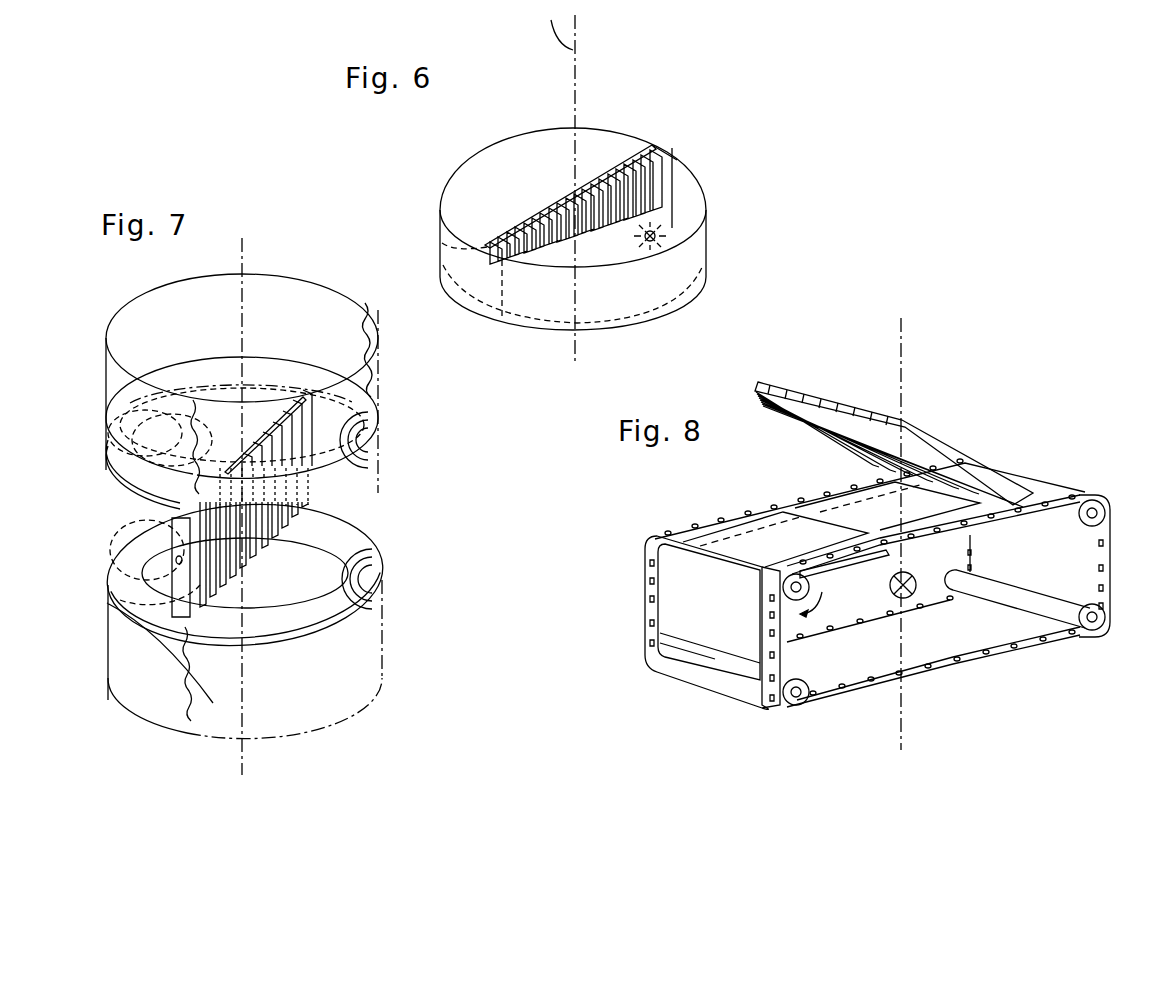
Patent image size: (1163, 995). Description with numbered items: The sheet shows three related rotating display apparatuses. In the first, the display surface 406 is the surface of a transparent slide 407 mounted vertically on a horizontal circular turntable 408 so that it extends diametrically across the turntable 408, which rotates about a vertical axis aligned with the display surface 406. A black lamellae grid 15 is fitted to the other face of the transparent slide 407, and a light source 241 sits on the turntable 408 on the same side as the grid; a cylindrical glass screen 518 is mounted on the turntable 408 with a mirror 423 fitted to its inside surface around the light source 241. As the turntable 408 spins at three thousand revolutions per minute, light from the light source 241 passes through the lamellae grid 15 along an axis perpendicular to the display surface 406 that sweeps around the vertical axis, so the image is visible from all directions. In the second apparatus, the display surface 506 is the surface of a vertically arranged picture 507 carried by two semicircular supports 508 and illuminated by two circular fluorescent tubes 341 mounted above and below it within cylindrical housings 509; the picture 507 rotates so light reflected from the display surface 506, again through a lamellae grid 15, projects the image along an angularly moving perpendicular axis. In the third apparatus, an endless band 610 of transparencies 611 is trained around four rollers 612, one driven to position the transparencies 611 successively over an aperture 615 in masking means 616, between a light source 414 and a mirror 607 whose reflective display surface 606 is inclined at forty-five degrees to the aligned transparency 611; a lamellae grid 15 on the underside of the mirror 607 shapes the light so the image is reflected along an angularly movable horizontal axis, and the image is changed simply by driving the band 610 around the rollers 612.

In FIG. 6, the black lamellae grid 15 is at (664, 164).
In FIG. 7, the black lamellae grid 15 is at (223, 565).
In FIG. 8, the black lamellae grid 15 is at (812, 427).
In FIG. 6, the light source 241 is at (654, 243).
In FIG. 7, the circular fluorescent tubes 341 is at (347, 400).
In FIG. 6, the display surface 406 is at (558, 193).
In FIG. 6, the transparent slide 407 is at (633, 148).
In FIG. 6, the horizontal circular turntable 408 is at (492, 227).
In FIG. 8, the light source 414 is at (918, 585).
In FIG. 6, the mirror 423 is at (691, 188).
In FIG. 7, the display surface 506 is at (177, 567).
In FIG. 7, the picture 507 is at (147, 592).
In FIG. 7, the semicircular supports 508 is at (125, 498).
In FIG. 7, the cylindrical housings 509 is at (106, 392).
In FIG. 6, the cylindrical glass screen 518 is at (712, 222).
In FIG. 8, the reflective display surface 606 is at (785, 405).
In FIG. 8, the mirror 607 is at (802, 392).
In FIG. 8, the endless band 610 is at (1078, 558).
In FIG. 8, the transparencies 611 is at (825, 512).
In FIG. 8, the rollers 612 is at (785, 587).
In FIG. 8, the aperture 615 is at (955, 543).
In FIG. 8, the masking means 616 is at (1047, 512).